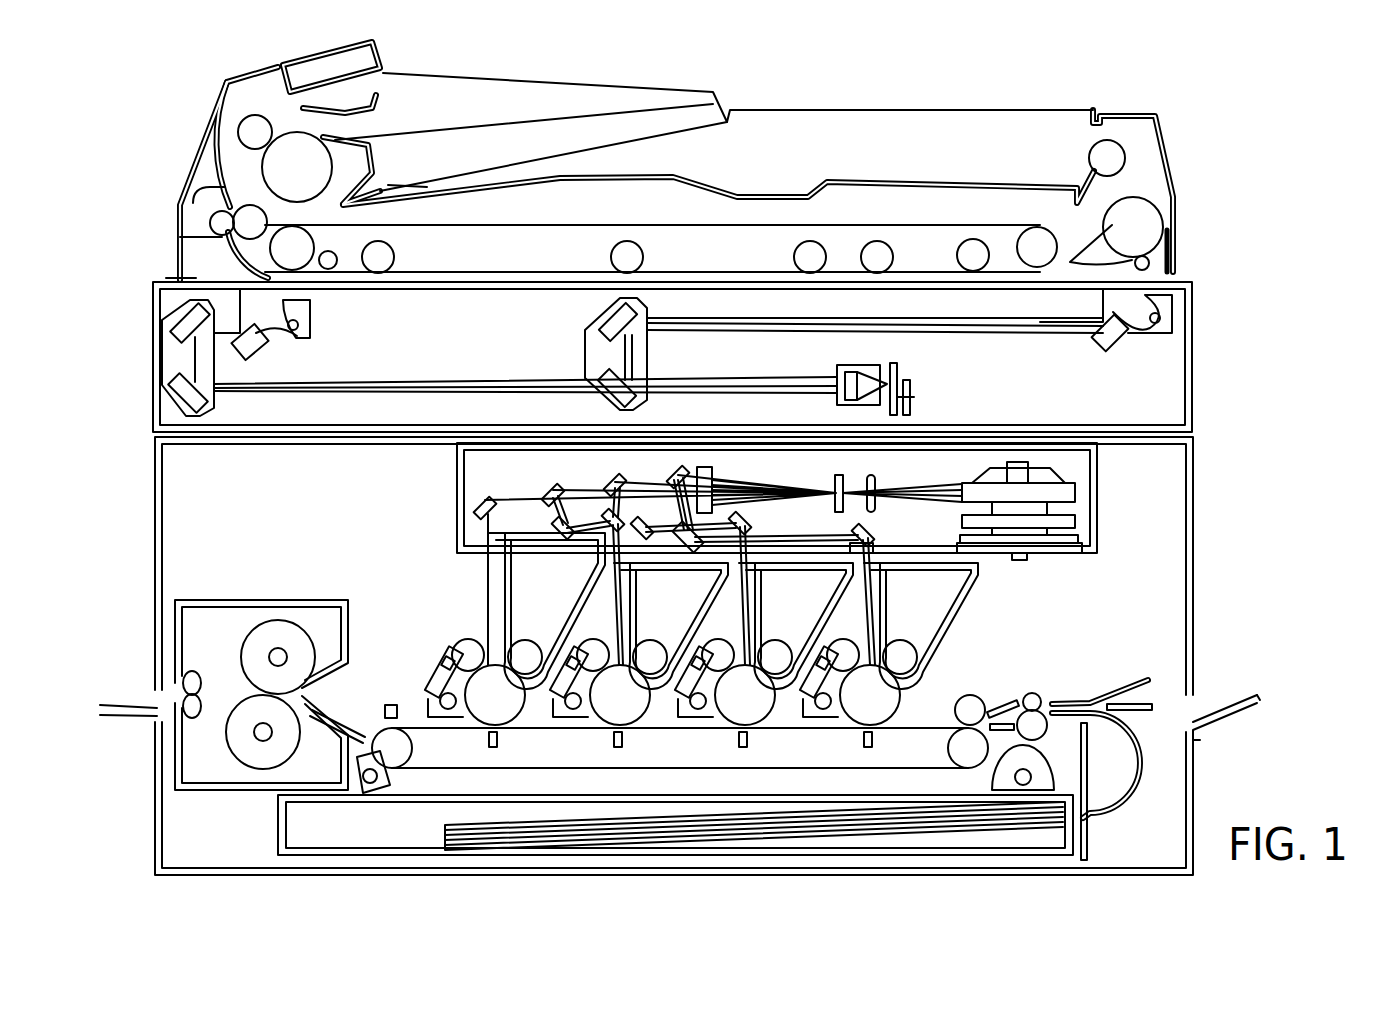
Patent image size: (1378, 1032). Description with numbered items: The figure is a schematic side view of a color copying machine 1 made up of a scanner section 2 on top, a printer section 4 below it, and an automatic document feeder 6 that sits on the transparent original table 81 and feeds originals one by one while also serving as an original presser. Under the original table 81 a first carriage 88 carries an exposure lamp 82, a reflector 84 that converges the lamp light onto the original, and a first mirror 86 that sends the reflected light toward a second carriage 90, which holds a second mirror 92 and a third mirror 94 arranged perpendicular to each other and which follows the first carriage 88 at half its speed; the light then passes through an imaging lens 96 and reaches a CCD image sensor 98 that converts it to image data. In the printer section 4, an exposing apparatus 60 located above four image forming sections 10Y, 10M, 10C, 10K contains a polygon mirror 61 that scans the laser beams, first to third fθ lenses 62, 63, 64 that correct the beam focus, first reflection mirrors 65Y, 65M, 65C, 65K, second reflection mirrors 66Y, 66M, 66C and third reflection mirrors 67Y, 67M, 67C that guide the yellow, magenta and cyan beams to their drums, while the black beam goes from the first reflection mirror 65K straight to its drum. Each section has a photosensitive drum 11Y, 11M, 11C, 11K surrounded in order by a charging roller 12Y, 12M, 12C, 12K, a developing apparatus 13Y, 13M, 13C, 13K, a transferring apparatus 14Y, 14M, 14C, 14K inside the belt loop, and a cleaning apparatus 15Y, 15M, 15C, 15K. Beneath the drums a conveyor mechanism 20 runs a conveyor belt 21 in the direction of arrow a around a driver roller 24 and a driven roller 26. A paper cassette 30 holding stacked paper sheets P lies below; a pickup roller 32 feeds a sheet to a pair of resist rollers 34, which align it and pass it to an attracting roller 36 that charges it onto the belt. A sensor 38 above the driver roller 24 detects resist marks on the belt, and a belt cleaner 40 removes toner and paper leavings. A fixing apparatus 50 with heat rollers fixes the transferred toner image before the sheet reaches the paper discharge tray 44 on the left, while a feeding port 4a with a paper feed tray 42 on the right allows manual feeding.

The color copying machine 1 is at (680, 480).
The scanner section 2 is at (1194, 358).
The printer section 4 is at (1194, 510).
The feeding port 4a is at (1197, 700).
The automatic document feeder 6 is at (1162, 142).
The original table 81 is at (495, 279).
The exposure lamp 82 is at (310, 338).
The reflector 84 is at (316, 302).
The first mirror 86 is at (258, 352).
The first carriage 88 is at (701, 353).
The second carriage 90 is at (576, 322).
The second mirror 92 is at (185, 318).
The third mirror 94 is at (185, 416).
The imaging lens 96 is at (852, 372).
The CCD image sensor 98 is at (914, 396).
The exposing apparatus 60 is at (1097, 458).
The polygon mirror 61 is at (1075, 492).
The first fθ lens 62 is at (875, 480).
The second fθ lens 63 is at (842, 478).
The third fθ lens 64 is at (712, 467).
The first reflection mirror for black 65K is at (480, 505).
The first reflection mirror for cyan 65C is at (548, 492).
The first reflection mirror for magenta 65M is at (617, 472).
The first reflection mirror for yellow 65Y is at (680, 470).
The second reflection mirror for cyan 66C is at (562, 538).
The second reflection mirror for magenta 66M is at (650, 540).
The second reflection mirror for yellow 66Y is at (700, 528).
The third reflection mirror for cyan 67C is at (610, 514).
The third reflection mirror for magenta 67M is at (748, 526).
The third reflection mirror for yellow 67Y is at (872, 535).
The fourth image forming section 10K is at (490, 667).
The third image forming section 10C is at (679, 745).
The second image forming section 10M is at (781, 682).
The first image forming section 10Y is at (927, 682).
The photosensitive drum for black 11K is at (495, 695).
The photosensitive drum for cyan 11C is at (620, 695).
The photosensitive drum for magenta 11M is at (745, 695).
The photosensitive drum for yellow 11Y is at (870, 695).
The charging roller for black 12K is at (466, 641).
The charging roller for cyan 12C is at (603, 648).
The charging roller for magenta 12M is at (728, 648).
The charging roller for yellow 12Y is at (853, 648).
The developing apparatus for black 13K is at (590, 598).
The developing apparatus for cyan 13C is at (712, 600).
The developing apparatus for magenta 13M is at (837, 600).
The developing apparatus for yellow 13Y is at (978, 585).
The transferring apparatus for black 14K is at (493, 750).
The transferring apparatus for cyan 14C is at (618, 750).
The transferring apparatus for magenta 14M is at (718, 767).
The transferring apparatus for yellow 14Y is at (868, 750).
The cleaning apparatus for black 15K is at (437, 690).
The cleaning apparatus for cyan 15C is at (570, 716).
The cleaning apparatus for magenta 15M is at (678, 706).
The cleaning apparatus for yellow 15Y is at (828, 712).
The conveyor mechanism 20 is at (680, 788).
The conveyor belt 21 is at (530, 730).
The driver roller 24 is at (412, 748).
The driven roller 26 is at (948, 748).
The paper cassette 30 is at (675, 858).
The pickup roller 32 is at (992, 778).
The pair of resist rollers 34 is at (1035, 692).
The attracting roller 36 is at (973, 695).
The sensor 38 is at (383, 710).
The belt cleaner 40 is at (365, 795).
The paper feed tray 42 is at (1241, 735).
The paper discharge tray 44 is at (130, 702).
The fixing apparatus 50 is at (250, 775).
The belt travel direction a is at (705, 737).
The paper sheet P is at (920, 830).